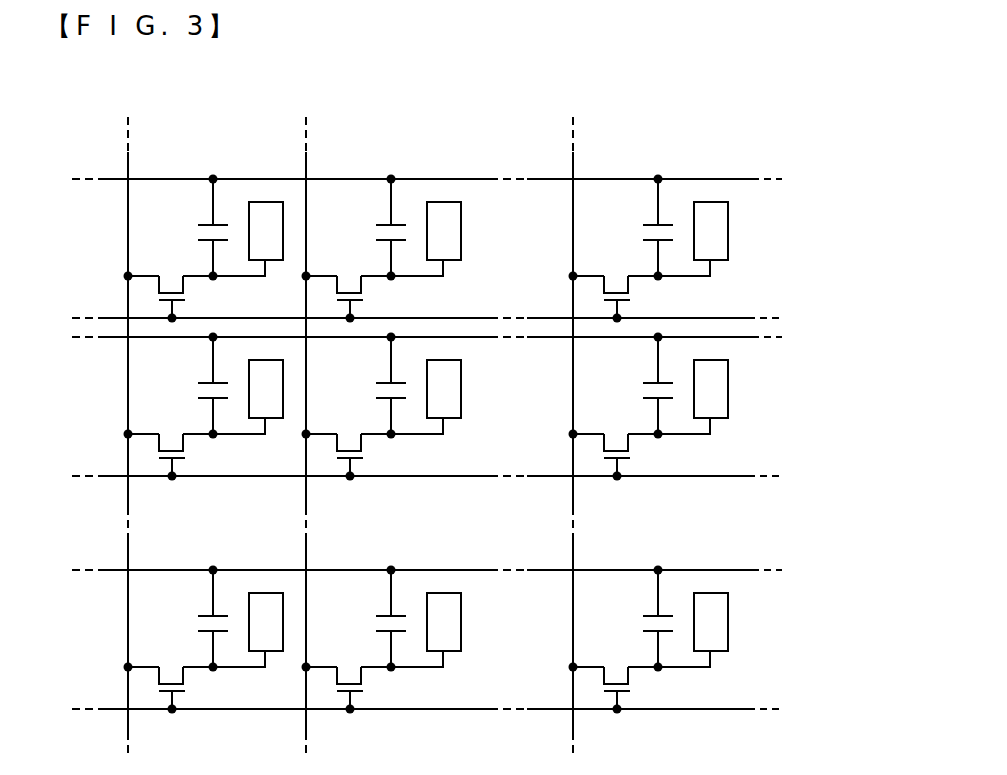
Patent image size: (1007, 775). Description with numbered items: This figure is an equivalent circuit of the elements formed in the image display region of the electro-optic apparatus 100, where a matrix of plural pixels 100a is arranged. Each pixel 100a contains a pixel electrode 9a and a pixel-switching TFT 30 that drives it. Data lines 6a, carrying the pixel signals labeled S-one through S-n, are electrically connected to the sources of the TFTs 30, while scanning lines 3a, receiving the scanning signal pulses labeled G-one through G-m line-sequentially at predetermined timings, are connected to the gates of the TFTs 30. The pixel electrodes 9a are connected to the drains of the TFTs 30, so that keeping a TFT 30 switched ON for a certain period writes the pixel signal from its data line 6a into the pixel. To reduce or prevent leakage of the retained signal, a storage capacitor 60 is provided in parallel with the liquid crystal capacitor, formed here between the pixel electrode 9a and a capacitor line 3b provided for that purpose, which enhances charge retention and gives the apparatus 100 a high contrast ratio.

The electro-optic apparatus 100 is at (785, 122).
The pixel 100a is at (150, 252).
The data line 6a is at (128, 152).
The scanning line 3a is at (748, 318).
The capacitor line 3b is at (752, 179).
The storage capacitor 60 is at (198, 233).
The pixel-switching TFT 30 is at (185, 290).
The pixel electrode 9a is at (272, 215).